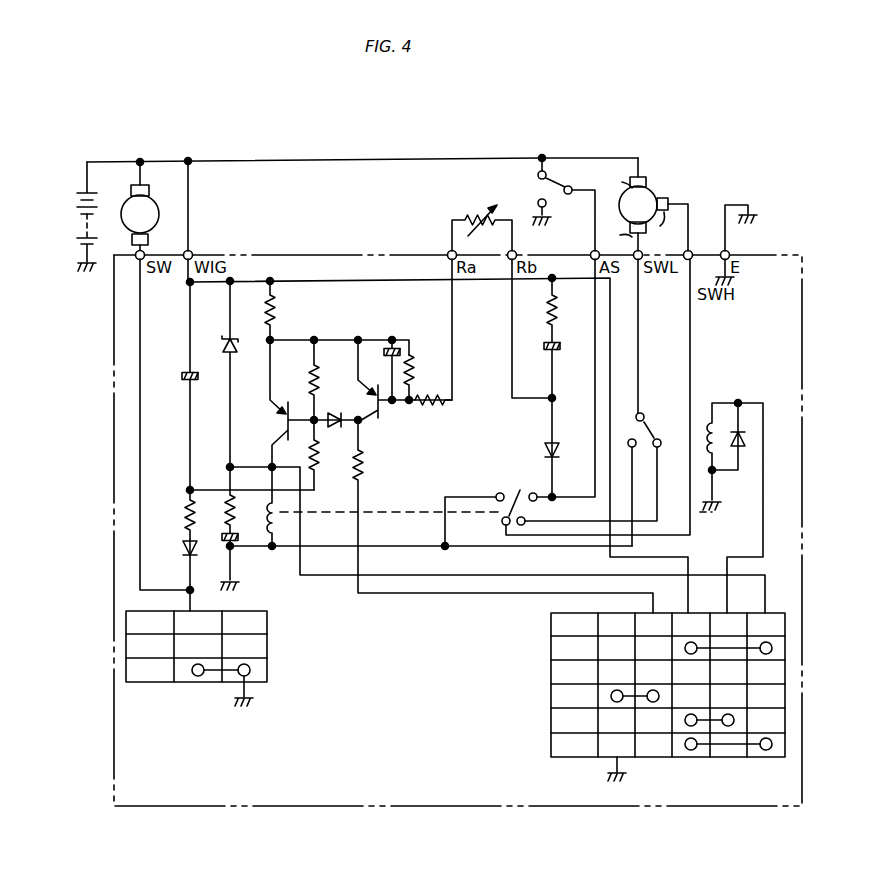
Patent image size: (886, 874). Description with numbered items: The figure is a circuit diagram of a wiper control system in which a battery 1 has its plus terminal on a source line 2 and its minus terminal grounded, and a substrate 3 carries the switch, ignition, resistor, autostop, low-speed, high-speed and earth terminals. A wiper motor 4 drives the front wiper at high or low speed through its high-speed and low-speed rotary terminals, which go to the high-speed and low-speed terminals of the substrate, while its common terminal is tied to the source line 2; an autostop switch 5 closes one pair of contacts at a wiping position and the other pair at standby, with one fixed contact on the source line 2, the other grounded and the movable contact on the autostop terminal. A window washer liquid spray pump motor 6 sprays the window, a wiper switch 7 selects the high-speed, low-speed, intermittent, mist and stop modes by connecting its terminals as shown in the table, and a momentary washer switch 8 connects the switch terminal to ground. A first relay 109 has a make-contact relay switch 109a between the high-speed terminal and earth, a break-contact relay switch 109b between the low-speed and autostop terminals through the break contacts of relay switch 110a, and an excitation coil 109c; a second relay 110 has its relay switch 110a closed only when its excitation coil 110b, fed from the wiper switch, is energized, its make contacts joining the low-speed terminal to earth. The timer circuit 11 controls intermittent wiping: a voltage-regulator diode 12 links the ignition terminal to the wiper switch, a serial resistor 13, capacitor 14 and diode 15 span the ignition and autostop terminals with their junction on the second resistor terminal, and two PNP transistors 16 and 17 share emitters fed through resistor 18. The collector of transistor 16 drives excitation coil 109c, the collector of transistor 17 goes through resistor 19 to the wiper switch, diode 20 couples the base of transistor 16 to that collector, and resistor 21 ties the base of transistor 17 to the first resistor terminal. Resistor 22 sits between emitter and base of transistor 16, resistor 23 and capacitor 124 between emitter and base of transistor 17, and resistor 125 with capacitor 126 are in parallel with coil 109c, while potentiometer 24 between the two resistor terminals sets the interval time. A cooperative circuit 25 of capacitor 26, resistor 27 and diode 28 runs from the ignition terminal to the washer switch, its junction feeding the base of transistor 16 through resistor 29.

The battery 1 is at (70, 200).
The source line 2 is at (254, 162).
The substrate 3 is at (672, 806).
The wiper motor 4 is at (650, 200).
The autostop switch 5 is at (528, 196).
The window washer liquid spray pump motor 6 is at (152, 198).
The wiper switch 7 is at (551, 694).
The washer switch 8 is at (267, 640).
The timer circuit 11 is at (342, 278).
The voltage-regulator diode 12 is at (228, 352).
The resistor 13 is at (558, 307).
The capacitor 14 is at (562, 352).
The diode 15 is at (558, 444).
The transistor 16 is at (270, 420).
The transistor 17 is at (380, 414).
The resistor 18 is at (276, 310).
The resistor 19 is at (364, 474).
The diode 20 is at (330, 408).
The resistor 21 is at (428, 405).
The resistor 22 is at (310, 382).
The resistor 23 is at (411, 373).
The potentiometer 24 is at (466, 213).
The cooperative circuit 25 is at (185, 360).
The capacitor 26 is at (184, 380).
The resistor 27 is at (184, 512).
The diode 28 is at (186, 543).
The resistor 29 is at (318, 449).
The first relay 109 is at (486, 486).
The make-contact relay switch 109a is at (502, 524).
The break-contact relay switch 109b is at (541, 500).
The excitation coil 109c is at (290, 522).
The second relay 110 is at (680, 458).
The relay switch 110a is at (648, 416).
The excitation coil 110b is at (710, 428).
The capacitor 124 is at (376, 350).
The resistor 125 is at (226, 494).
The capacitor 126 is at (222, 550).